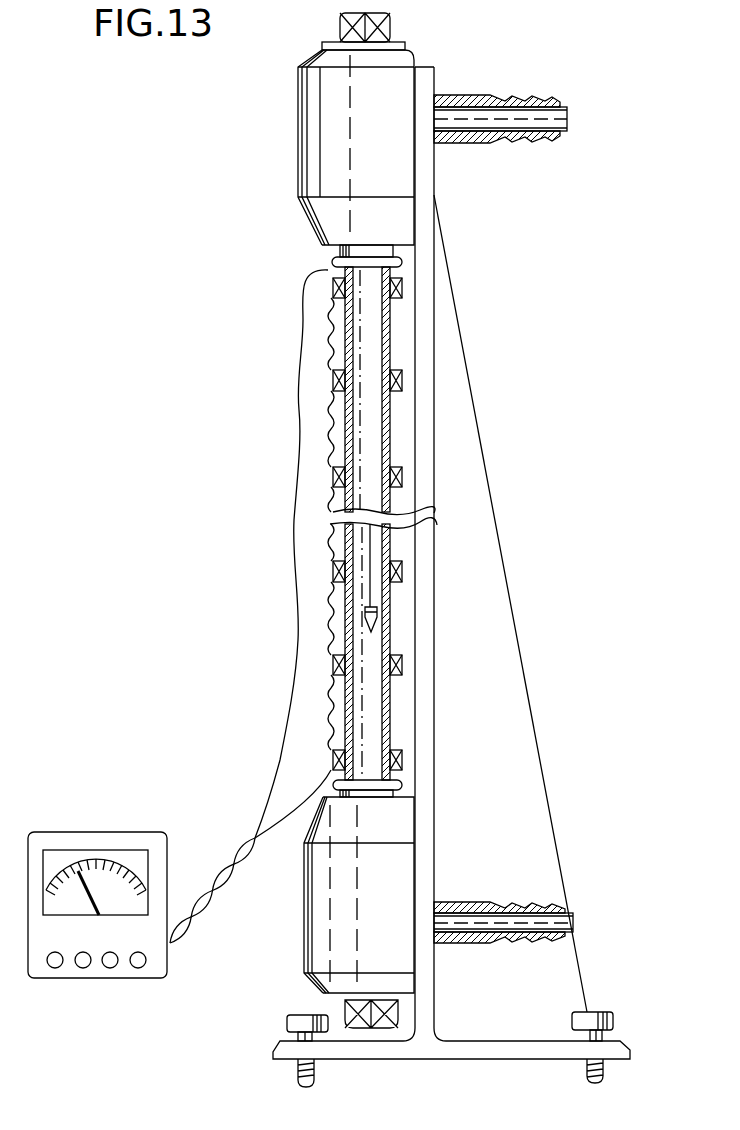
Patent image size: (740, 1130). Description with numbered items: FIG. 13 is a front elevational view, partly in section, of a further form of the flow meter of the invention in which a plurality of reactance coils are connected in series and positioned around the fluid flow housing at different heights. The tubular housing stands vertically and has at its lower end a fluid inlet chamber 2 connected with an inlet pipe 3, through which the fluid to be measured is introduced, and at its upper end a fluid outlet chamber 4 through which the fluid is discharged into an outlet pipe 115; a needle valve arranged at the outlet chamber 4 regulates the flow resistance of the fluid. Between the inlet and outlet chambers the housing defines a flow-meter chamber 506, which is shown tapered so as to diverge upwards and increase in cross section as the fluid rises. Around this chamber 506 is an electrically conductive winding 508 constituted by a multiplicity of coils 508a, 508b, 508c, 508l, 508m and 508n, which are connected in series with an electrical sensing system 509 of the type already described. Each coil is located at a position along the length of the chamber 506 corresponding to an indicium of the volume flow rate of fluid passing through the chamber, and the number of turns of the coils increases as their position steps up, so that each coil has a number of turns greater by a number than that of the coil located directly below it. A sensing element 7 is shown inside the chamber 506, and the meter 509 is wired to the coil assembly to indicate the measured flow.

The fluid inlet chamber 2 is at (313, 920).
The inlet pipe 3 is at (577, 920).
The fluid outlet chamber 4 is at (310, 163).
The thermocouple sensor 7 is at (372, 603).
The upper pipe fitting 115 is at (573, 118).
The flow-meter chamber 506 is at (373, 443).
The electrically conductive winding 508 is at (609, 222).
The coil 508a is at (400, 752).
The coil 508b is at (400, 655).
The coil 508c is at (403, 572).
The coil 508l is at (402, 471).
The coil 508m is at (402, 379).
The coil 508n is at (402, 287).
The electrical sensing system 509 is at (98, 832).